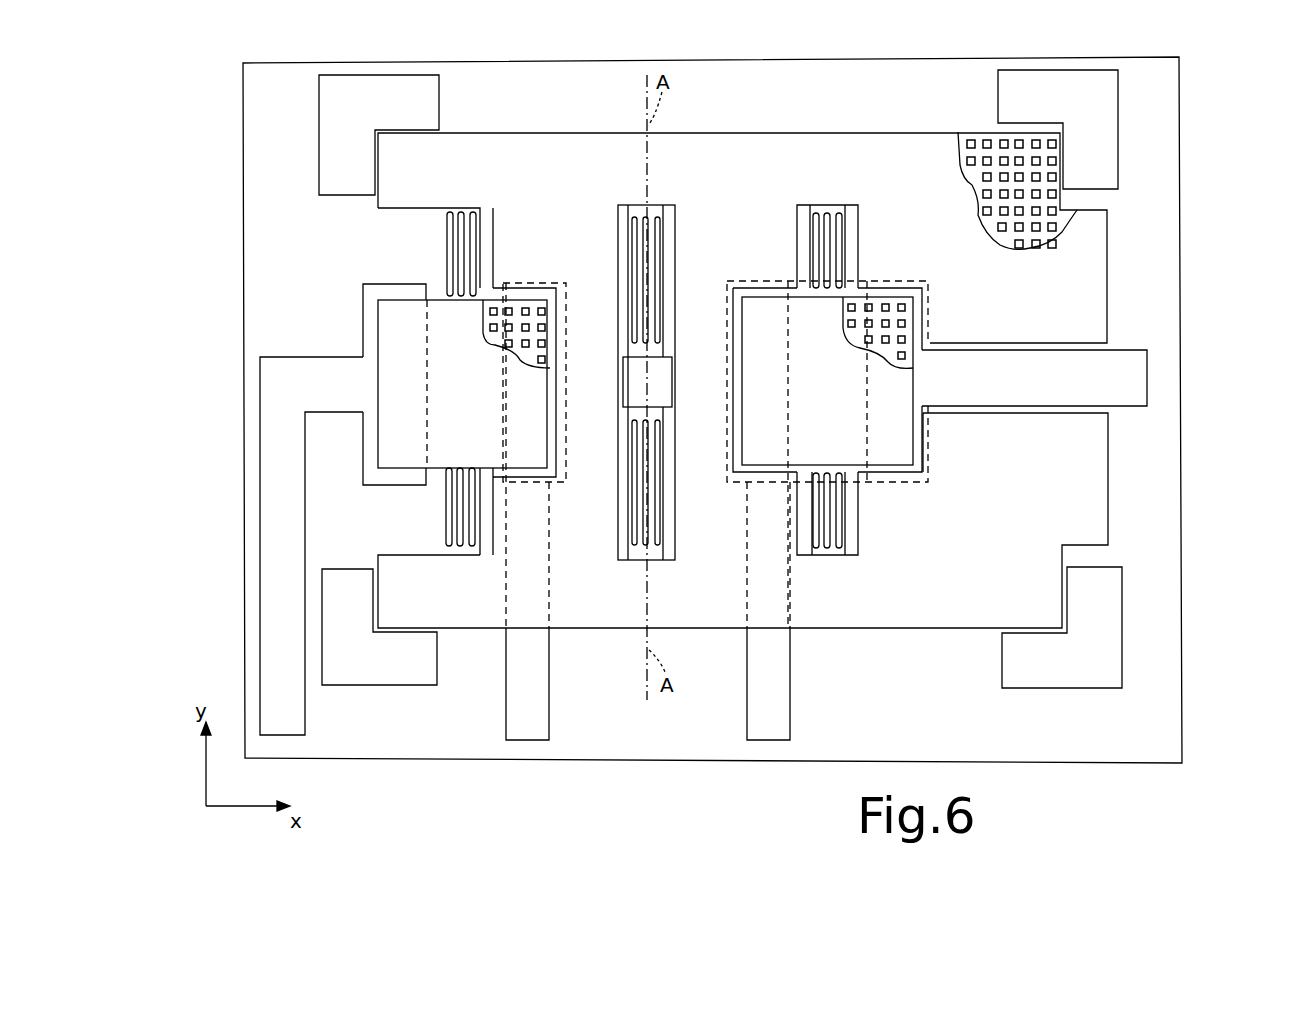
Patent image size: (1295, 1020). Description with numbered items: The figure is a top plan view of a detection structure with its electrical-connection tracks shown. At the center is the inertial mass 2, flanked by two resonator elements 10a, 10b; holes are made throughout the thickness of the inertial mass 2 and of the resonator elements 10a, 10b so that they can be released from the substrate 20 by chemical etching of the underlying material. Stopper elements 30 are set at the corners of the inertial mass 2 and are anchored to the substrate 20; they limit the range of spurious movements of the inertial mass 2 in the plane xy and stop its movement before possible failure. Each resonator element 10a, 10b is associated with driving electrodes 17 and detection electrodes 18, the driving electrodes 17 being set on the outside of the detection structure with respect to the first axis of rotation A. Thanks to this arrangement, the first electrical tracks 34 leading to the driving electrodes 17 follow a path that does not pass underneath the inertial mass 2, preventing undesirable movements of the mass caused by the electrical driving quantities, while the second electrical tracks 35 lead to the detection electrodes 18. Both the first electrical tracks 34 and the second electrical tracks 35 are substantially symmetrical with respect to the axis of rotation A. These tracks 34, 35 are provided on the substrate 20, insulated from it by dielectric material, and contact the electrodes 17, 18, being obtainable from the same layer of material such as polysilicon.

The inertial mass 2 is at (873, 597).
The resonator element 10a is at (835, 362).
The resonator element 10b is at (460, 358).
The driving electrode 17 is at (398, 293).
The detection electrode 18 is at (530, 283).
The substrate 20 is at (1157, 180).
The stopper element 30 is at (342, 98).
The first electrical track 34 is at (280, 520).
The second electrical track 35 is at (527, 713).